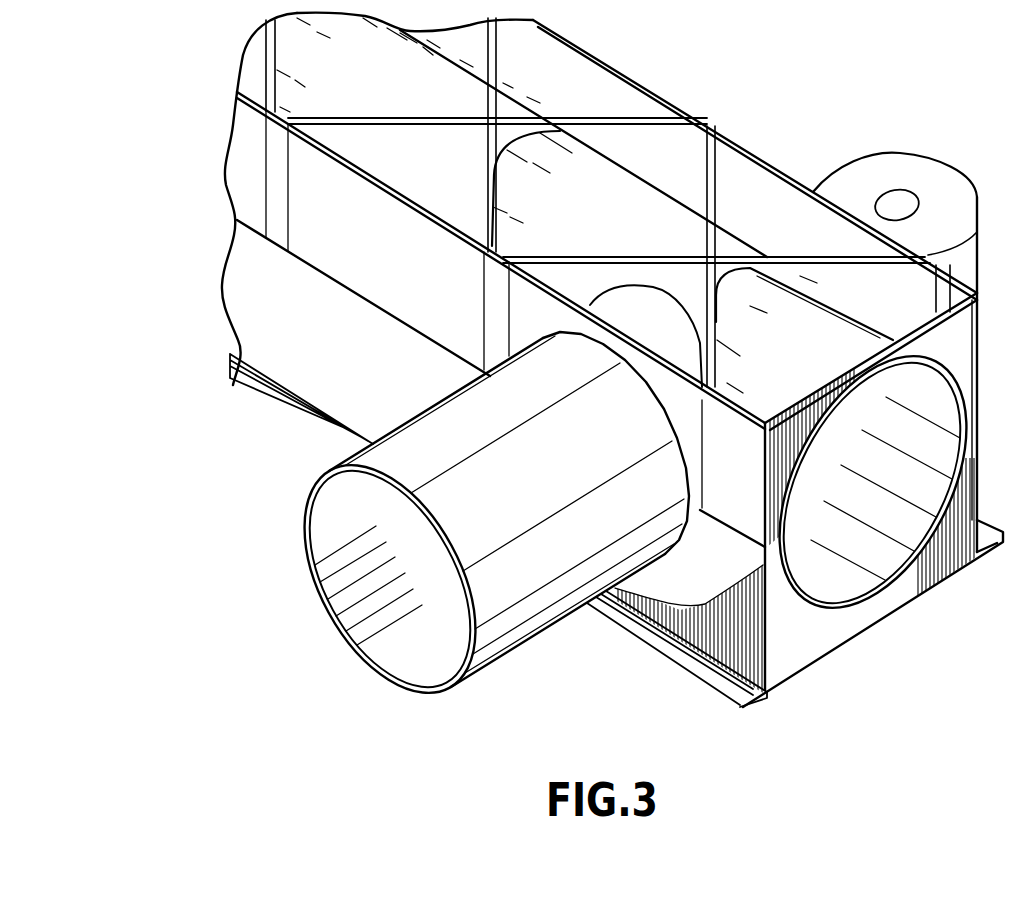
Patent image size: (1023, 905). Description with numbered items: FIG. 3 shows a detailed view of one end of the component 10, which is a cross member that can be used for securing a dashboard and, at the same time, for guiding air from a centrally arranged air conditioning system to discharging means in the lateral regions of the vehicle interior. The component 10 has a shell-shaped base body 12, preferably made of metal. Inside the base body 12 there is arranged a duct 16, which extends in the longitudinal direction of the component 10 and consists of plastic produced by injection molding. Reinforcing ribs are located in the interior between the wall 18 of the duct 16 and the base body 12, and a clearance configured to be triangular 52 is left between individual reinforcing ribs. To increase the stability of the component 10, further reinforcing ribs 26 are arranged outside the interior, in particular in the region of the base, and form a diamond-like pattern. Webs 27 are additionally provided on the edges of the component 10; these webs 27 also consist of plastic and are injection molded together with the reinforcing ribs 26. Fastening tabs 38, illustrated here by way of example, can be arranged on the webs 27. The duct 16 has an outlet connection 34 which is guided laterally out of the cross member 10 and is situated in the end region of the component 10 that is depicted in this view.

The component 10 is at (167, 626).
The base body 12 is at (720, 632).
The duct 16 is at (532, 226).
The wall 18 is at (373, 90).
The reinforcing ribs 26 is at (647, 143).
The webs 27 is at (587, 88).
The outlet connection 34 is at (340, 633).
The fastening tabs 38 is at (937, 203).
The triangular clearance 52 is at (762, 203).